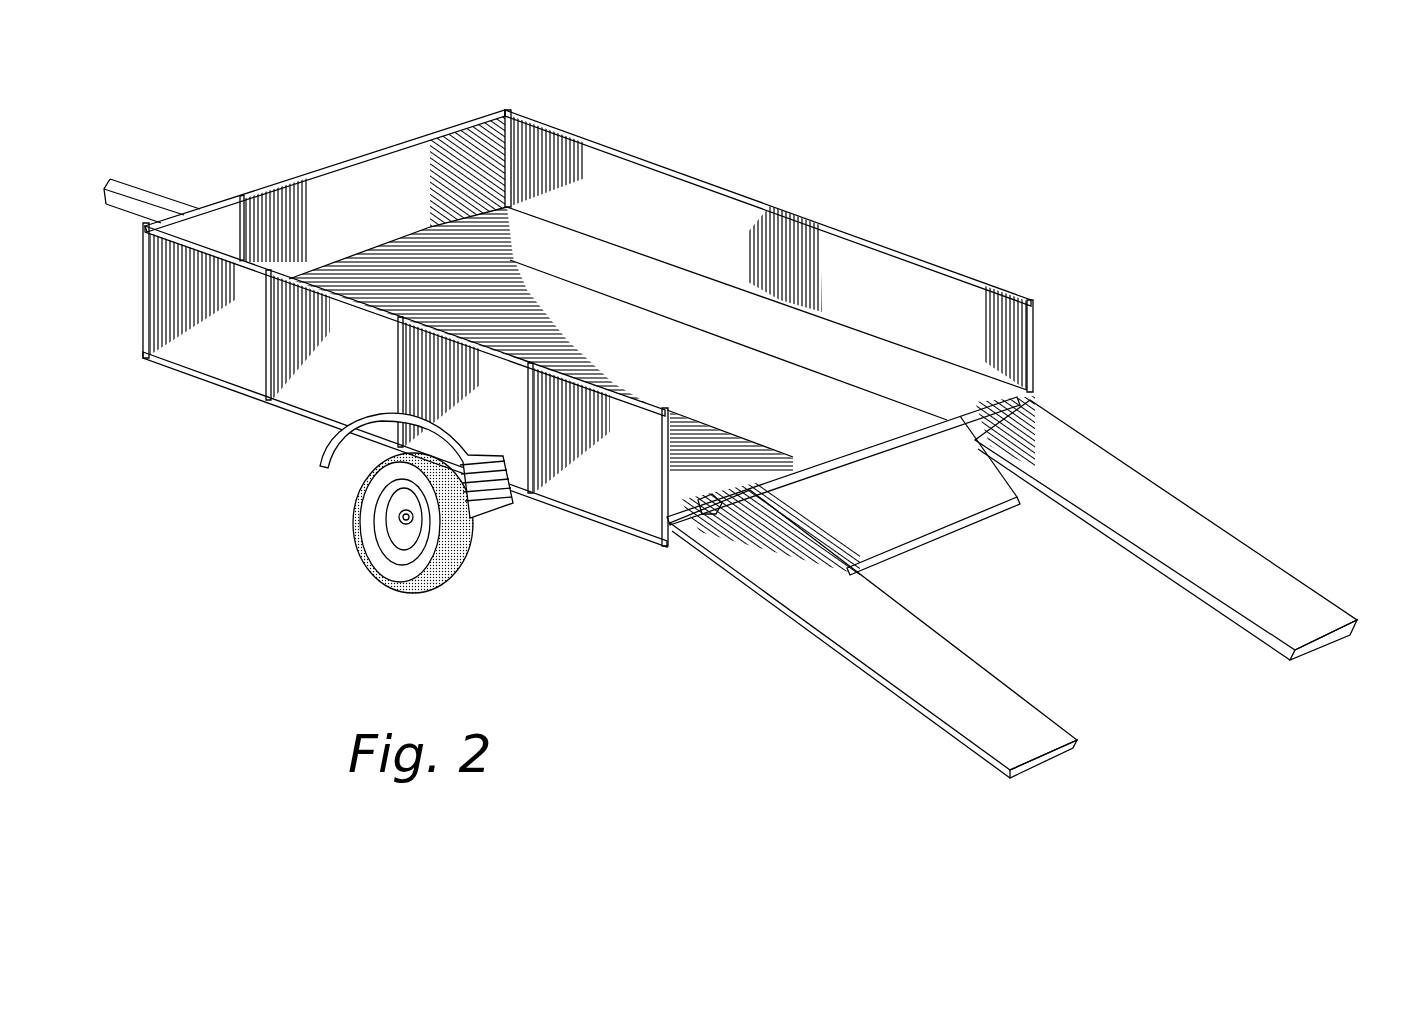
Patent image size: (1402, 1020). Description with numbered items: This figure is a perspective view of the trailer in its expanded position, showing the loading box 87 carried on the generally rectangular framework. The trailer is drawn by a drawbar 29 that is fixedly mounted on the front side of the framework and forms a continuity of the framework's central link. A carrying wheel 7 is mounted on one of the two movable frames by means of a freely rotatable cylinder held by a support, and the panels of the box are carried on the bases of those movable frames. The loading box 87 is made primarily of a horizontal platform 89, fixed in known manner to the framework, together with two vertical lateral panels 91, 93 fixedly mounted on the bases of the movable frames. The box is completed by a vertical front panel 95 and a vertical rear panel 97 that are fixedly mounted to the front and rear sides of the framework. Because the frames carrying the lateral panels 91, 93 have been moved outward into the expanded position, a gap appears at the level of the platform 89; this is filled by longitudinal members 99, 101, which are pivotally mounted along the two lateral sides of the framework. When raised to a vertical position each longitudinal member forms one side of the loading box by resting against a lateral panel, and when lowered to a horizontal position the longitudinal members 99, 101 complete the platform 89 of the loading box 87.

The carrying wheel 7 is at (453, 547).
The drawbar 29 is at (122, 180).
The loading box 87 is at (900, 194).
The horizontal platform 89 is at (815, 404).
The vertical lateral panel 91 is at (681, 203).
The vertical lateral panel 93 is at (242, 342).
The vertical front panel 95 is at (388, 192).
The vertical rear panel 97 is at (940, 490).
The longitudinal member 99 is at (1008, 392).
The longitudinal member 101 is at (723, 507).